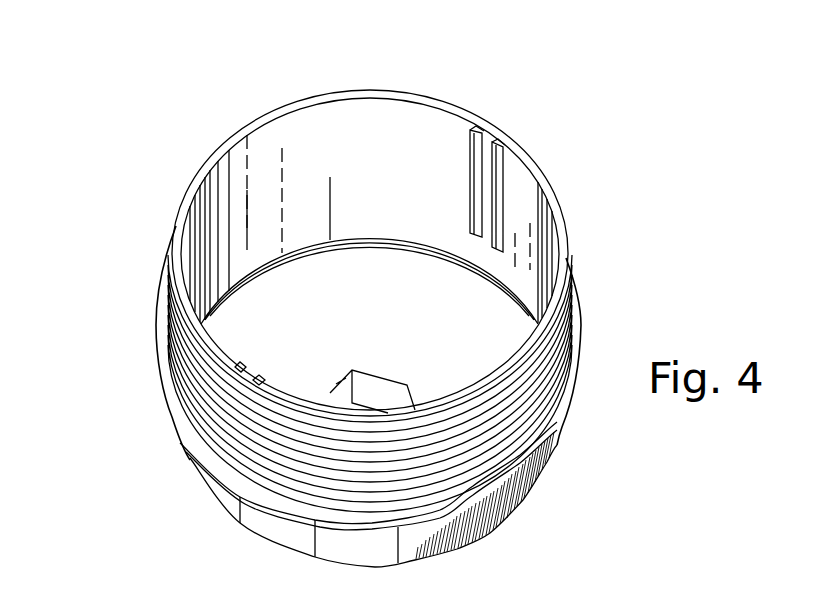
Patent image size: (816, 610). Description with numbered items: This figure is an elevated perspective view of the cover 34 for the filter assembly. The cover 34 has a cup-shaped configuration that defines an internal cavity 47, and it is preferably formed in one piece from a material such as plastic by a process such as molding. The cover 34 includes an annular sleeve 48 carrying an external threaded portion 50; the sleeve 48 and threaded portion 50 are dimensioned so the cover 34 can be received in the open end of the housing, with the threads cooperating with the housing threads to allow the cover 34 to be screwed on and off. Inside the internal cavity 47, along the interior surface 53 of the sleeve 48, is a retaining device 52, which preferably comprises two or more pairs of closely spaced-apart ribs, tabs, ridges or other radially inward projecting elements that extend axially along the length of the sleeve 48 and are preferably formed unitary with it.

The cover 34 is at (355, 291).
The internal cavity 47 is at (333, 150).
The annular sleeve 48 is at (177, 217).
The external threaded portion 50 is at (521, 405).
The retaining device 52 is at (499, 133).
The interior surface 53 is at (222, 252).